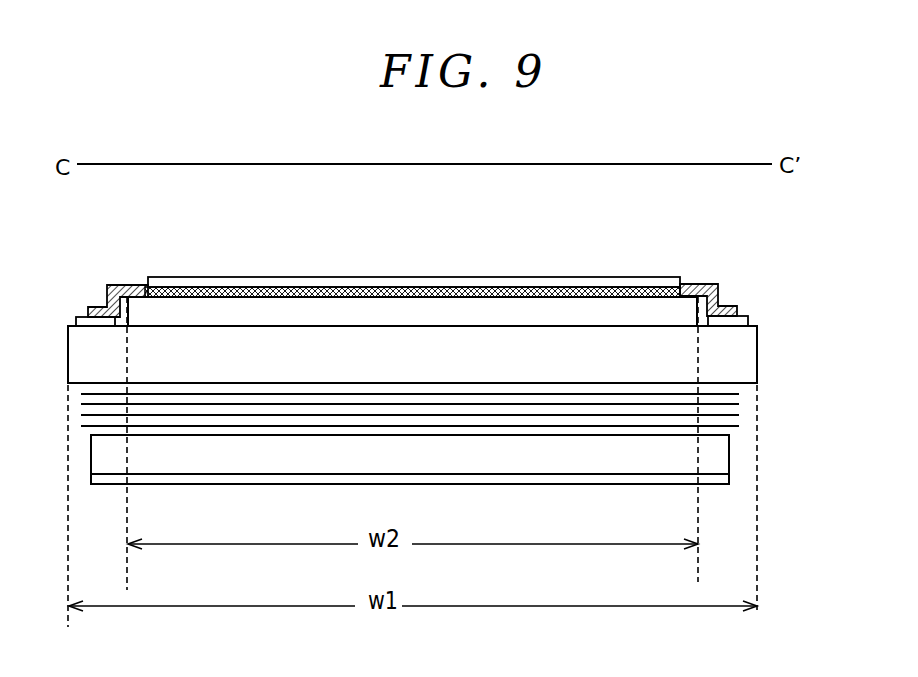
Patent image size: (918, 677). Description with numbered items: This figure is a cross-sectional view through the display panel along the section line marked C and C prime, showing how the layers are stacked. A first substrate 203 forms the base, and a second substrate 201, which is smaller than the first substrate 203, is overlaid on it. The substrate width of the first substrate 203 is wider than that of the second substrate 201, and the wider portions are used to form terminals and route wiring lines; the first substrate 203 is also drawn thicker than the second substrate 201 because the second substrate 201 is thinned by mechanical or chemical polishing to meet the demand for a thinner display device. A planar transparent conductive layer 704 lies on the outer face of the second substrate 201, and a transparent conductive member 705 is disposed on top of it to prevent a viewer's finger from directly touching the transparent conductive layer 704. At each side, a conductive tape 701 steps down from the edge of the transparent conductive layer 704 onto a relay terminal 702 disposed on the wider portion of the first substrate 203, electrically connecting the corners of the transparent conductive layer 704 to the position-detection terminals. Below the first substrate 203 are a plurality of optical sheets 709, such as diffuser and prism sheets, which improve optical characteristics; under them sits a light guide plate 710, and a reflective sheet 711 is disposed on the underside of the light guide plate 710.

The second substrate 201 is at (253, 313).
The first substrate 203 is at (745, 354).
The conductive tape 701 is at (113, 283).
The relay terminal 702 is at (82, 316).
The transparent conductive layer 704 is at (352, 288).
The transparent conductive member 705 is at (445, 279).
The optical sheets 709 is at (757, 388).
The light guide plate 710 is at (723, 451).
The reflective sheet 711 is at (723, 477).